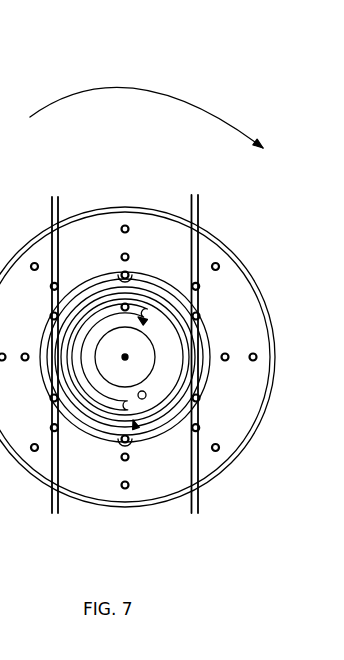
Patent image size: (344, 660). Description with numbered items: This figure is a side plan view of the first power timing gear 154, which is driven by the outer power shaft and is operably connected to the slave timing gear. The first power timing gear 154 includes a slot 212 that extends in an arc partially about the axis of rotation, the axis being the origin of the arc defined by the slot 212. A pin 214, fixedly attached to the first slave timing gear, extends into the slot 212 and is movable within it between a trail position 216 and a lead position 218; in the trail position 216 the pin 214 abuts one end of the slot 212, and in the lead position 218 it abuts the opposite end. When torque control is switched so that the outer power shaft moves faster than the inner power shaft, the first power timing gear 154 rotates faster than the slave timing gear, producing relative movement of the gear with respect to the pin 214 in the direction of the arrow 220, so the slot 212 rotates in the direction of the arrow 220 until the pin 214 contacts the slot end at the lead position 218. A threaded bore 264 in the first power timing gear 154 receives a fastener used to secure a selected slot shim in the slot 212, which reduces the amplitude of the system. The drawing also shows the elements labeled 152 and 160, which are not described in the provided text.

The second conduit 152 is at (197, 505).
The housing flange 154 is at (203, 229).
The first conduit 160 is at (58, 197).
The spiral channel 212 is at (101, 396).
The aperture 214 is at (128, 305).
The inlet flow direction 216 is at (141, 320).
The outlet flow direction 218 is at (135, 424).
The rotation direction 220 is at (120, 88).
The outlet port 264 is at (145, 392).